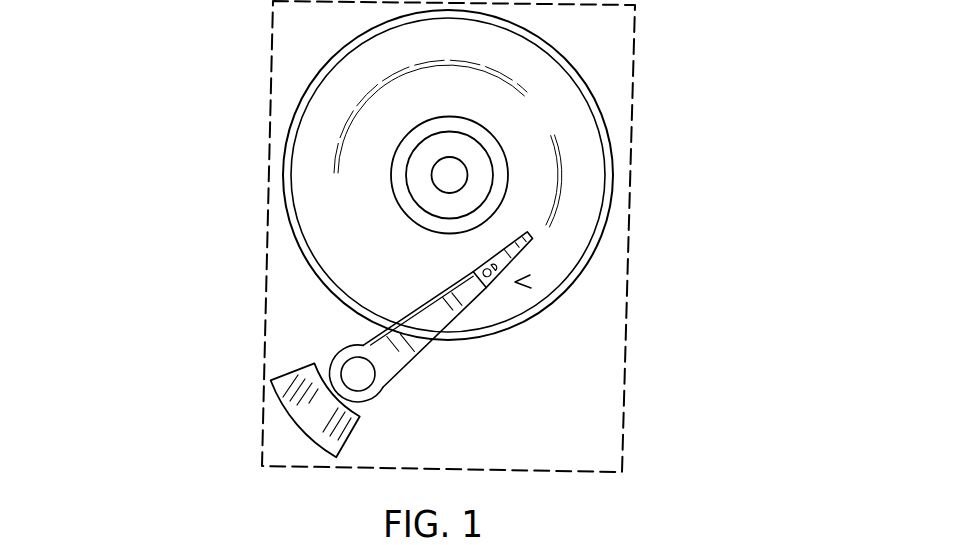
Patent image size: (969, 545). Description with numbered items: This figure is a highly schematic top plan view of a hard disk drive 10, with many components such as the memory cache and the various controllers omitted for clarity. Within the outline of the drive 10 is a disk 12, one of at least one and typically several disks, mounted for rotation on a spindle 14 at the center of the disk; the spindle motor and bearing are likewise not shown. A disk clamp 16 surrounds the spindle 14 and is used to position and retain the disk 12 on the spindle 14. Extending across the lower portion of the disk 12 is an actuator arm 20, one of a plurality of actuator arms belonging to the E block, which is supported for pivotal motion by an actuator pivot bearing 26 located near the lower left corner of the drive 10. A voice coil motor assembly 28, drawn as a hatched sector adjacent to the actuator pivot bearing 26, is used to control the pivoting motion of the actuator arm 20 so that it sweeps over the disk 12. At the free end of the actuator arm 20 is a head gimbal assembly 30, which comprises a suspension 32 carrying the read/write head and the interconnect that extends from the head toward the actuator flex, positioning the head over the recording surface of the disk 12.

The hard disk drive 10 is at (186, 180).
The disk 12 is at (306, 128).
The spindle 14 is at (455, 168).
The disk clamp 16 is at (483, 188).
The actuator arm 20 is at (362, 346).
The actuator pivot bearing 26 is at (356, 372).
The voice coil motor assembly 28 is at (298, 420).
The head gimbal assembly 30 is at (515, 282).
The suspension 32 is at (497, 283).